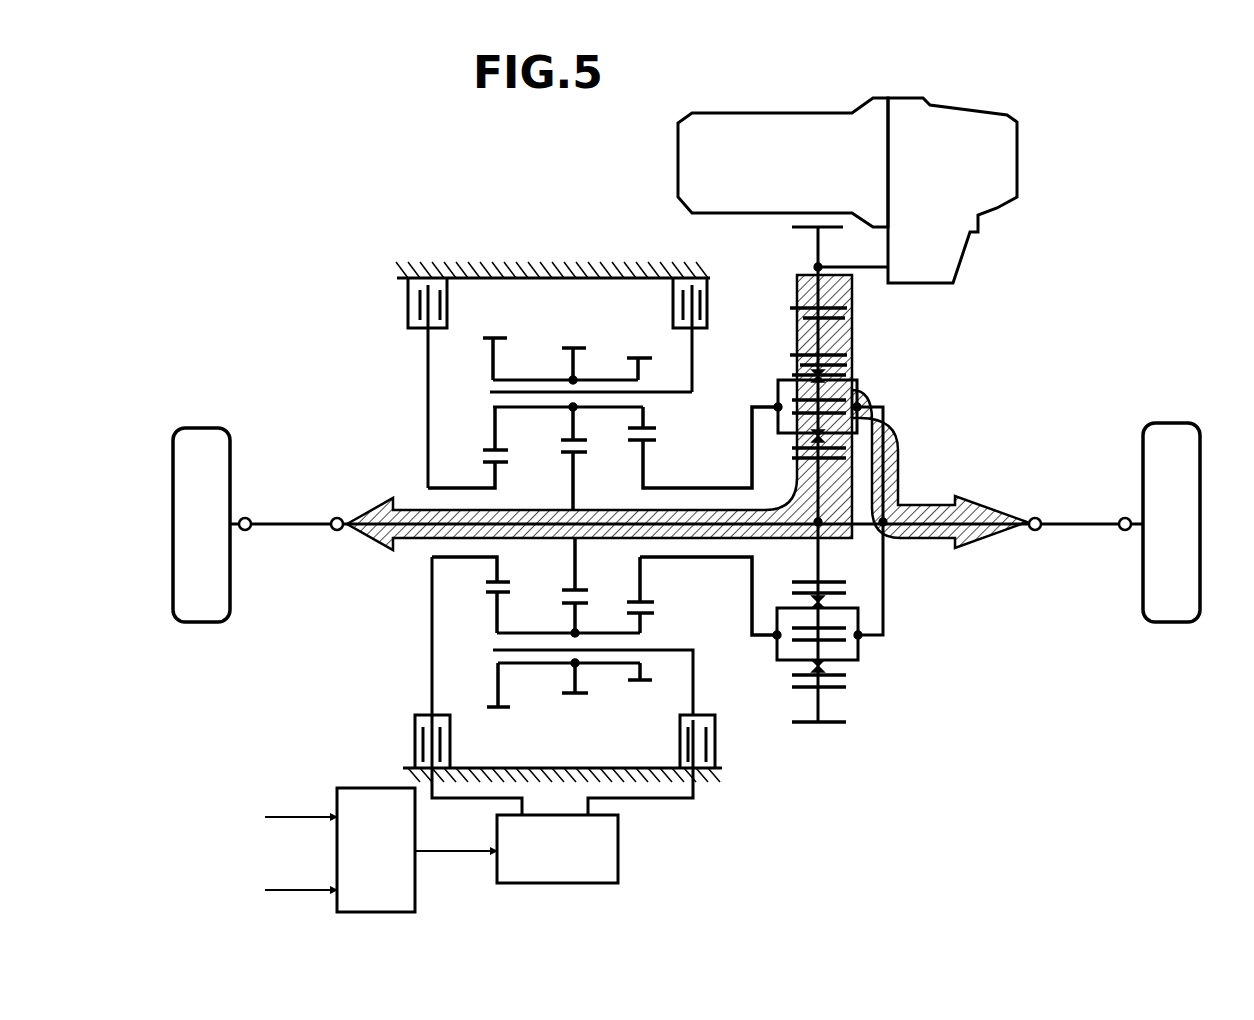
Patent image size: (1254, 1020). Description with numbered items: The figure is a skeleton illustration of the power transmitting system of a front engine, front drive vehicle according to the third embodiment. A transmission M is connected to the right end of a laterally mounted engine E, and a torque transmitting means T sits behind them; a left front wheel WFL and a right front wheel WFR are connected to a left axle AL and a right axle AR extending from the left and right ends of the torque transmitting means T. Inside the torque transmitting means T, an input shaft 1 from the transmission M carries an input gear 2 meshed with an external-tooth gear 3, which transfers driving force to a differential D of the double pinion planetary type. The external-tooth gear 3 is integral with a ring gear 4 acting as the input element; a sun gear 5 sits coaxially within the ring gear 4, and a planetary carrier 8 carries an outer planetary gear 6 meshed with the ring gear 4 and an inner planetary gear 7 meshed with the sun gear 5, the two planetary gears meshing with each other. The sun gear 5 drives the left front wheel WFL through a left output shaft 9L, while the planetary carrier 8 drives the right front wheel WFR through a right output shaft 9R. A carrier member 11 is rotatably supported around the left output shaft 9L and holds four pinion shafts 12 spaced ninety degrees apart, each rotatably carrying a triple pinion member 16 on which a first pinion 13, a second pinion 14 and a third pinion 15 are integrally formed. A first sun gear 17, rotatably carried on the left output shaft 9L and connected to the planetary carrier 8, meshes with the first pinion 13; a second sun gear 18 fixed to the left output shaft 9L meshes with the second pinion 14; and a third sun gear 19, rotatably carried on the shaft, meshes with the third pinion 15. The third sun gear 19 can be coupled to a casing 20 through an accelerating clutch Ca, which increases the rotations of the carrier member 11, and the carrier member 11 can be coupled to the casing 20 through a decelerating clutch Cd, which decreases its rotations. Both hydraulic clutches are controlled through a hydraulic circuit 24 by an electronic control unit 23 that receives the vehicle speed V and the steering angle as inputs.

The input shaft 1 is at (847, 267).
The input gear 2 is at (792, 230).
The external-tooth gear 3 is at (790, 308).
The ring gear 4 is at (790, 352).
The sun gear 5 is at (835, 598).
The outer planetary gear 6 is at (790, 368).
The inner planetary gear 7 is at (792, 455).
The planetary carrier 8 is at (770, 407).
The left output shaft 9L is at (413, 506).
The right output shaft 9R is at (960, 500).
The carrier member 11 is at (672, 648).
The pinion shafts 12 is at (490, 392).
The first pinion 13 is at (636, 356).
The second pinion 14 is at (573, 345).
The third pinion 15 is at (492, 338).
The triple pinion member 16 is at (527, 372).
The first sun gear 17 is at (657, 441).
The second sun gear 18 is at (584, 453).
The third sun gear 19 is at (506, 464).
The casing 20 is at (531, 270).
The electronic control unit 23 is at (392, 866).
The hydraulic circuit 24 is at (574, 866).
The engine E is at (788, 172).
The transmission M is at (952, 179).
The torque transmitting means T is at (487, 212).
The accelerating clutch Ca is at (403, 315).
The decelerating clutch Cd is at (712, 300).
The differential D is at (897, 370).
The left front wheel WFL is at (192, 428).
The right front wheel WFR is at (1162, 423).
The left axle AL is at (290, 520).
The right axle AR is at (1080, 520).
The vehicle speed V is at (284, 811).